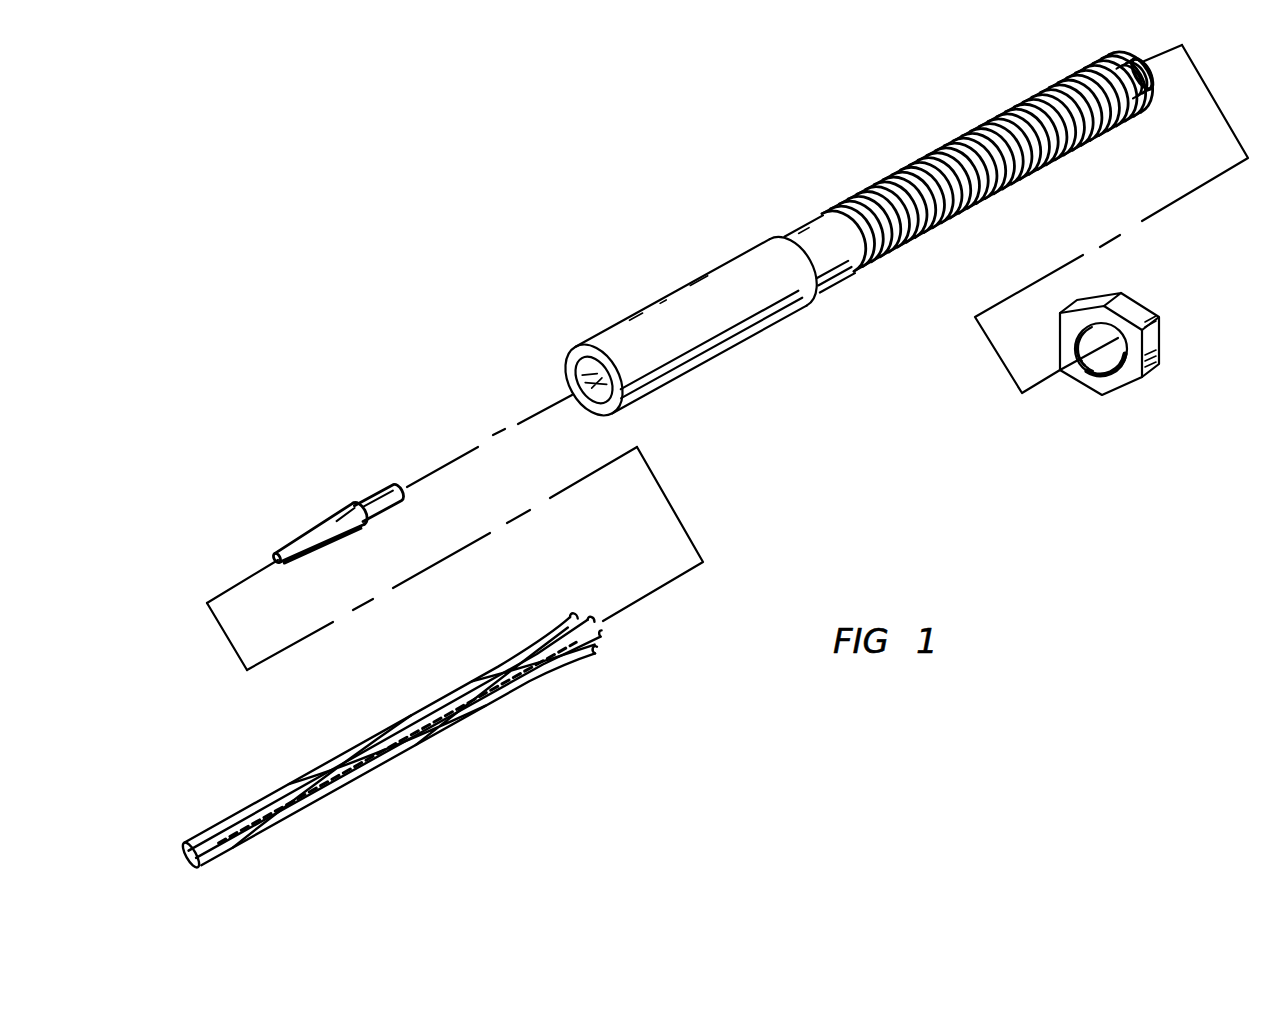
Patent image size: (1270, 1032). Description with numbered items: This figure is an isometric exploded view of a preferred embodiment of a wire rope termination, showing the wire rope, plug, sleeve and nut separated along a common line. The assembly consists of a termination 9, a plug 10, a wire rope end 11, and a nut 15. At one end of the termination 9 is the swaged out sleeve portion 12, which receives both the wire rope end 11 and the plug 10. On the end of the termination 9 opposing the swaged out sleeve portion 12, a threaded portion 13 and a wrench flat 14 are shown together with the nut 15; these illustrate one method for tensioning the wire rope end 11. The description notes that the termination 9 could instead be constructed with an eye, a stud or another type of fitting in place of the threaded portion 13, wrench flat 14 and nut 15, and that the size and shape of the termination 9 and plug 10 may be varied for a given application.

The termination 9 is at (838, 212).
The plug 10 is at (313, 528).
The wire rope end 11 is at (440, 737).
The swaged out sleeve portion 12 is at (655, 300).
The threaded portion 13 is at (908, 160).
The wrench flat 14 is at (1100, 72).
The nut 15 is at (1118, 383).